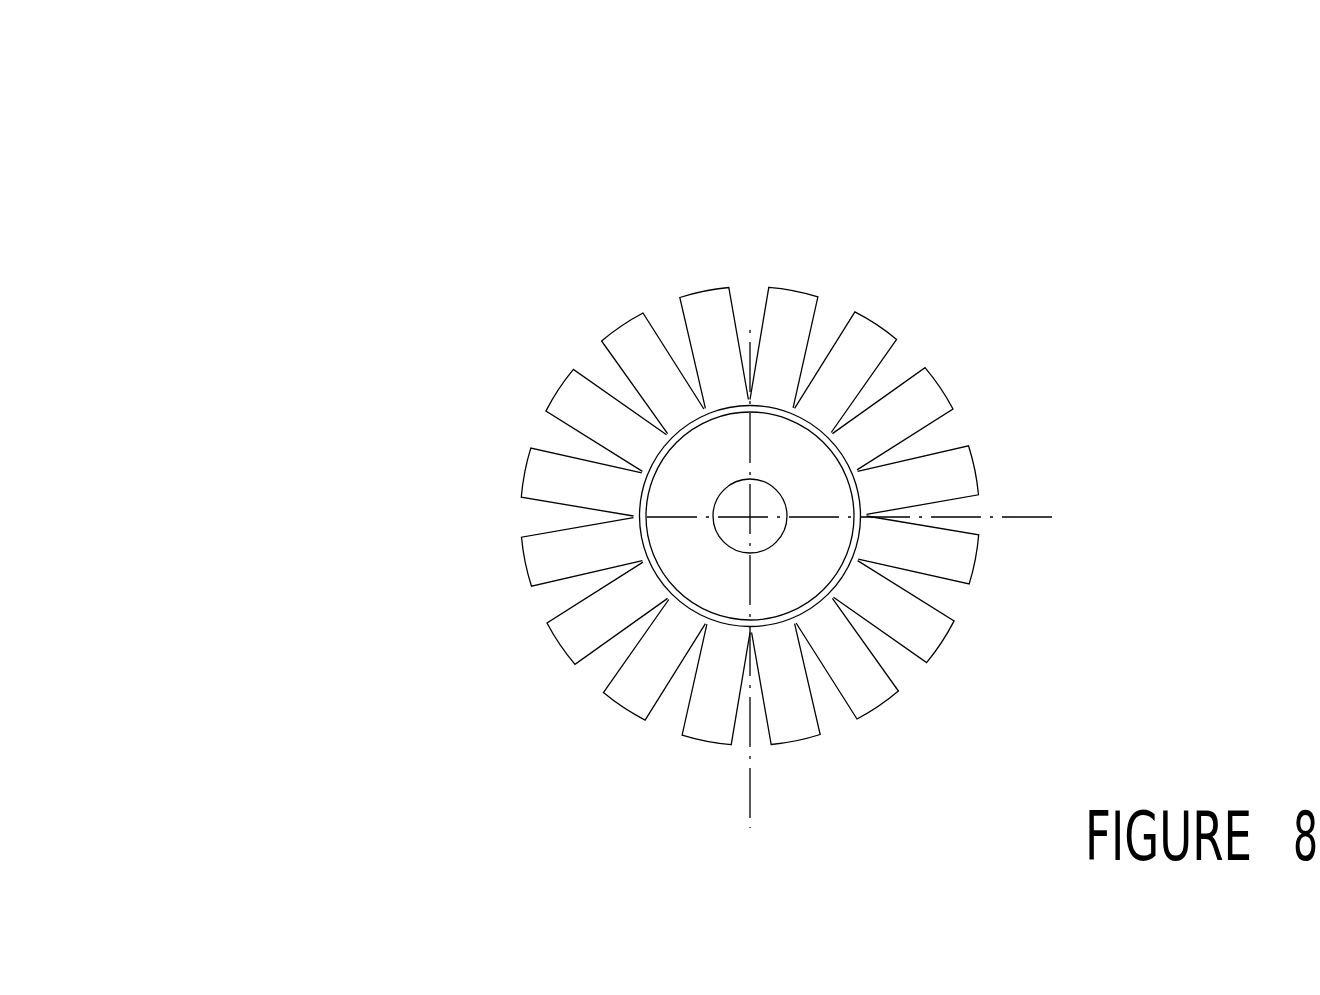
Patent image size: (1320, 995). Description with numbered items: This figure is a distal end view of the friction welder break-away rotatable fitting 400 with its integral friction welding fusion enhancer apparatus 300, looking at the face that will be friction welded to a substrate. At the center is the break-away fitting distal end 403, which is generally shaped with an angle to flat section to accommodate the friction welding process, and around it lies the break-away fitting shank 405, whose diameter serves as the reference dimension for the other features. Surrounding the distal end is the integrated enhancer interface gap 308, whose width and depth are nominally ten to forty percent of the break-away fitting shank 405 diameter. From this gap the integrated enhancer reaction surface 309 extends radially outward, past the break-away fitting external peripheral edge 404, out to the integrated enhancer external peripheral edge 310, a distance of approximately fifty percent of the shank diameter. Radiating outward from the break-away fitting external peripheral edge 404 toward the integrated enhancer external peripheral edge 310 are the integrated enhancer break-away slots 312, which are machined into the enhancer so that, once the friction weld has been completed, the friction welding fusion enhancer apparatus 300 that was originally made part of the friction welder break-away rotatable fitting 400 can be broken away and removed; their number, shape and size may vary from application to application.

The friction welding fusion enhancer apparatus 300 is at (782, 387).
The integrated enhancer interface gap 308 is at (868, 328).
The integrated enhancer reaction surface 309 is at (892, 250).
The integrated enhancer external peripheral edge 310 is at (1011, 346).
The integrated enhancer break-away slots 312 is at (852, 429).
The friction welder break-away rotatable fitting 400 is at (641, 328).
The break-away fitting distal end 403 is at (487, 291).
The break-away fitting external peripheral edge 404 is at (666, 325).
The break-away fitting shank 405 is at (462, 308).